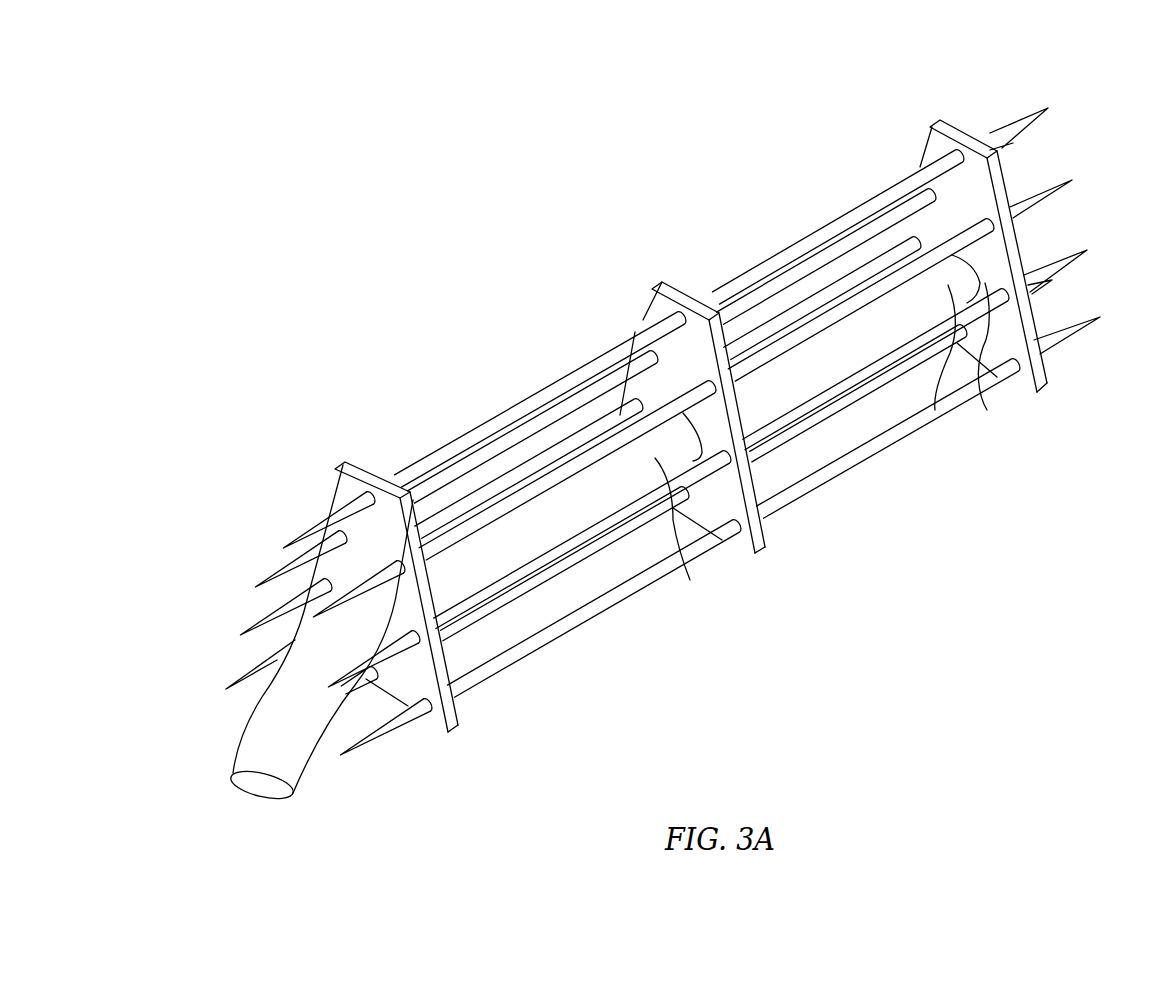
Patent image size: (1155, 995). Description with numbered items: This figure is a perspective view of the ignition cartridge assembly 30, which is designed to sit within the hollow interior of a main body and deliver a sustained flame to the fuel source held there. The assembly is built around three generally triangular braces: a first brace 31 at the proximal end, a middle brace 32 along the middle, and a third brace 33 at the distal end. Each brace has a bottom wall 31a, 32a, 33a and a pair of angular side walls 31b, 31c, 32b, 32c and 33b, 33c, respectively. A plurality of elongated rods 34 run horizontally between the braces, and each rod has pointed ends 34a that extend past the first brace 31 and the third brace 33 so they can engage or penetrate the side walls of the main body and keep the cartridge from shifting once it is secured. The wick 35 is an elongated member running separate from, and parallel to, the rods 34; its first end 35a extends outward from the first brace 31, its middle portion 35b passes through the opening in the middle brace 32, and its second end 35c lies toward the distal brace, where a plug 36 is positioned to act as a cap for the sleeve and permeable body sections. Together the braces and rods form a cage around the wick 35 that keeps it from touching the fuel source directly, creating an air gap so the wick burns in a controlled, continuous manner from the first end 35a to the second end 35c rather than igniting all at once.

The ignition cartridge assembly 30 is at (522, 195).
The first brace 31 is at (351, 446).
The bottom wall 31a is at (443, 732).
The angular side wall 31b is at (452, 690).
The angular side wall 31c is at (343, 472).
The middle brace 32 is at (657, 266).
The bottom wall 32a is at (748, 552).
The angular side wall 32b is at (765, 512).
The angular side wall 32c is at (652, 310).
The third brace 33 is at (936, 104).
The bottom wall 33a is at (1040, 395).
The angular side wall 33b is at (1033, 353).
The angular side wall 33c is at (923, 148).
The elongated rods 34 is at (877, 290).
The pointed ends 34a is at (1028, 112).
The wick 35 is at (222, 737).
The first end 35a is at (268, 785).
The middle portion 35b is at (690, 580).
The second end 35c is at (935, 410).
The plug 36 is at (987, 410).